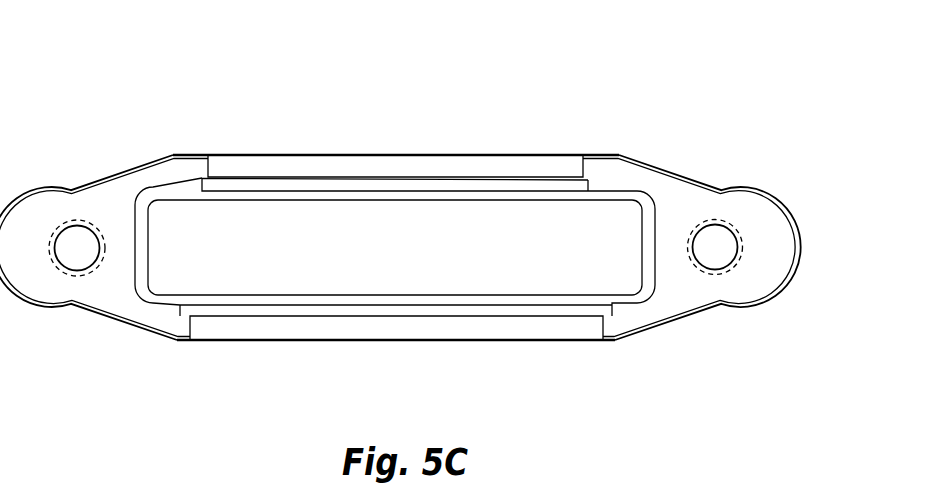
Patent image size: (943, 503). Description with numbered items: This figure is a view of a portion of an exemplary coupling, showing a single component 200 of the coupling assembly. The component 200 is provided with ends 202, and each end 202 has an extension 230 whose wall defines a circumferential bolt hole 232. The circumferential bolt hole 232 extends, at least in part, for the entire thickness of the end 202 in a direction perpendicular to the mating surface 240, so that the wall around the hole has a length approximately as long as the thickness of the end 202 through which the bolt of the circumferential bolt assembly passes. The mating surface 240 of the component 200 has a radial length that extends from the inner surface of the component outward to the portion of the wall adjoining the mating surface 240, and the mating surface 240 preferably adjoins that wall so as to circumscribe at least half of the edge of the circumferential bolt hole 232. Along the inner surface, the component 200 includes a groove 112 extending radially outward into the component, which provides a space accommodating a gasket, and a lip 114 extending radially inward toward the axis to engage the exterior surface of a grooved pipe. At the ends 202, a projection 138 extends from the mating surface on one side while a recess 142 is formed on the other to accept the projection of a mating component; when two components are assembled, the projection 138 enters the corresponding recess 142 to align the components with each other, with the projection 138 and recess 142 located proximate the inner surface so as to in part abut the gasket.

The component 200 is at (416, 215).
The groove 112 is at (247, 218).
The lip 114 is at (388, 160).
The projection 138 is at (617, 190).
The recess 142 is at (180, 190).
The end 202 is at (72, 202).
The extension 230 is at (142, 346).
The circumferential bolt hole 232 is at (728, 252).
The mating surface 240 is at (113, 300).